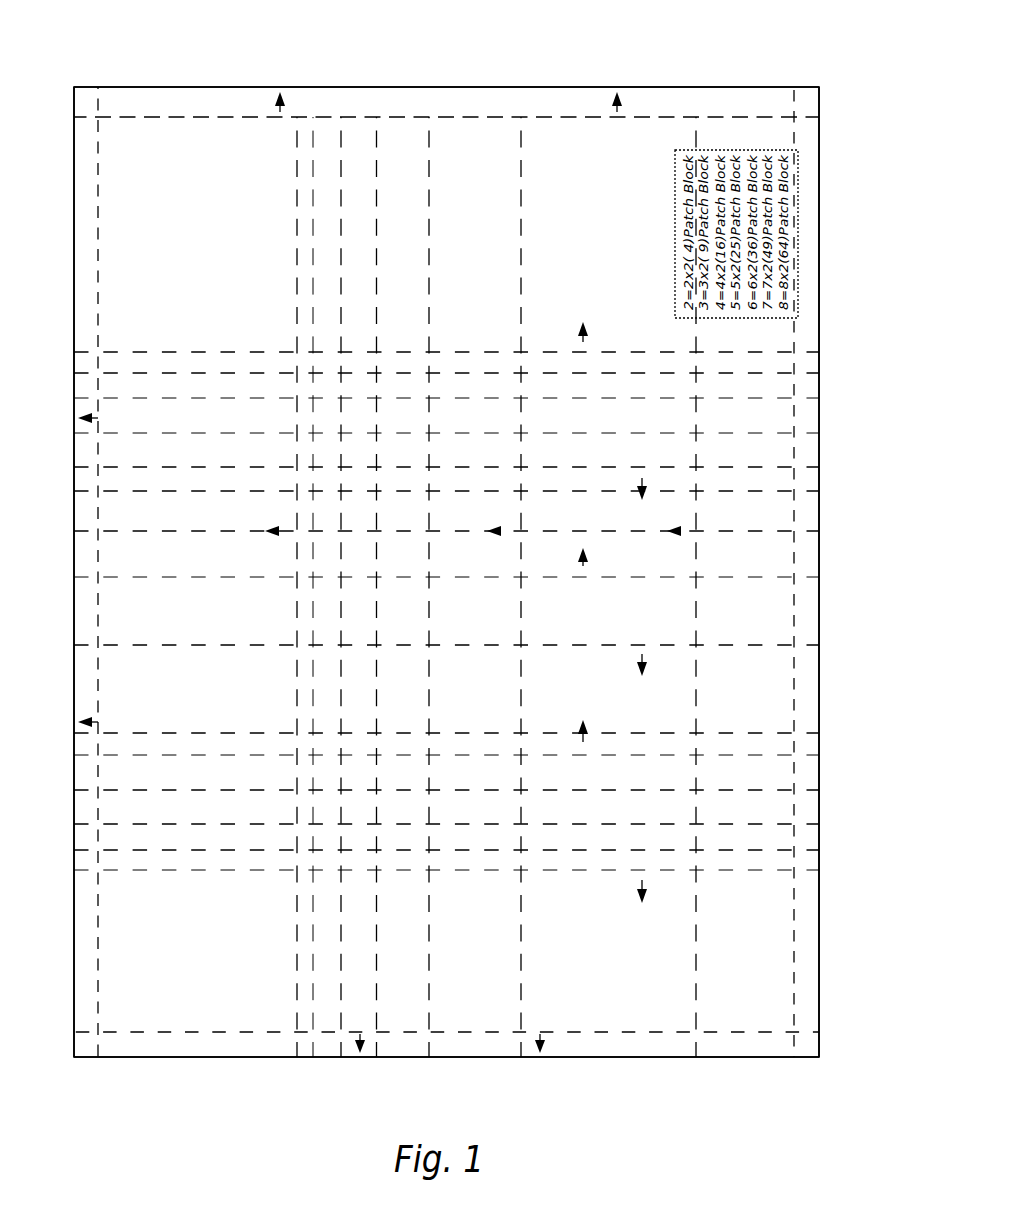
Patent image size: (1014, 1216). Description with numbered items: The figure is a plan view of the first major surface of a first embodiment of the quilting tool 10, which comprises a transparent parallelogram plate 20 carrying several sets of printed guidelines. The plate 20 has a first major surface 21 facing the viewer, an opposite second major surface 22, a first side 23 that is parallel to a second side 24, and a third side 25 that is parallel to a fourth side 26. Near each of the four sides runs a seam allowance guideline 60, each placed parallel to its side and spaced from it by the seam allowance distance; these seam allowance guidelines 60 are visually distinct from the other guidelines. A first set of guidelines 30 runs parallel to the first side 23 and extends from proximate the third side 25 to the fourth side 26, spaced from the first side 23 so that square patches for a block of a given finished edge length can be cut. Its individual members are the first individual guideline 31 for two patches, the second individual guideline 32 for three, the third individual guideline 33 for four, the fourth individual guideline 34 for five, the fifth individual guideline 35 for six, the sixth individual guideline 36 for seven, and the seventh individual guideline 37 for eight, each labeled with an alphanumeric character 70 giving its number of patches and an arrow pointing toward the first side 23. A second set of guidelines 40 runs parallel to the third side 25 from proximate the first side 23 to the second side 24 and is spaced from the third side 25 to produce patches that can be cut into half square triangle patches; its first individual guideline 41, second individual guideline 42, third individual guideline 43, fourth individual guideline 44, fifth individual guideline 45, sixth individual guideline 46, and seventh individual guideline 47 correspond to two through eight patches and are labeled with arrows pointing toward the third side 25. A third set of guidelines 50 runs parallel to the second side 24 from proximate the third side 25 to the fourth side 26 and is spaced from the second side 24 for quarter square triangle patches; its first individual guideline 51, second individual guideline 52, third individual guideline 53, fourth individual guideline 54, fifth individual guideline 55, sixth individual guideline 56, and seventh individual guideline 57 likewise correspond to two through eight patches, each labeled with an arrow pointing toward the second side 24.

The quilting tool 10 is at (164, 62).
The transparent parallelogram plate 20 is at (242, 1060).
The first major surface 21 is at (186, 1015).
The second major surface 22 is at (592, 1008).
The first side 23 is at (412, 1060).
The second side 24 is at (483, 86).
The third side 25 is at (73, 200).
The fourth side 26 is at (820, 232).
The first set of guidelines 30 is at (856, 940).
The first individual guideline 31 is at (810, 468).
The second individual guideline 32 is at (810, 647).
The third individual guideline 33 is at (810, 733).
The fourth individual guideline 34 is at (810, 790).
The fifth individual guideline 35 is at (810, 824).
The sixth individual guideline 36 is at (810, 850).
The seventh individual guideline 37 is at (810, 870).
The second set of guidelines 40 is at (52, 950).
The first individual guideline 41 is at (87, 755).
The second individual guideline 42 is at (87, 577).
The third individual guideline 43 is at (87, 491).
The fourth individual guideline 44 is at (87, 433).
The fifth individual guideline 45 is at (87, 398).
The sixth individual guideline 46 is at (87, 373).
The seventh individual guideline 47 is at (87, 352).
The third set of guidelines 50 is at (262, 60).
The first individual guideline 51 is at (697, 116).
The second individual guideline 52 is at (521, 116).
The third individual guideline 53 is at (430, 116).
The fourth individual guideline 54 is at (376, 116).
The fifth individual guideline 55 is at (341, 116).
The sixth individual guideline 56 is at (313, 116).
The seventh individual guideline 57 is at (298, 116).
The seam allowance guidelines 60 is at (738, 116).
The alphanumeric character 70 is at (820, 529).